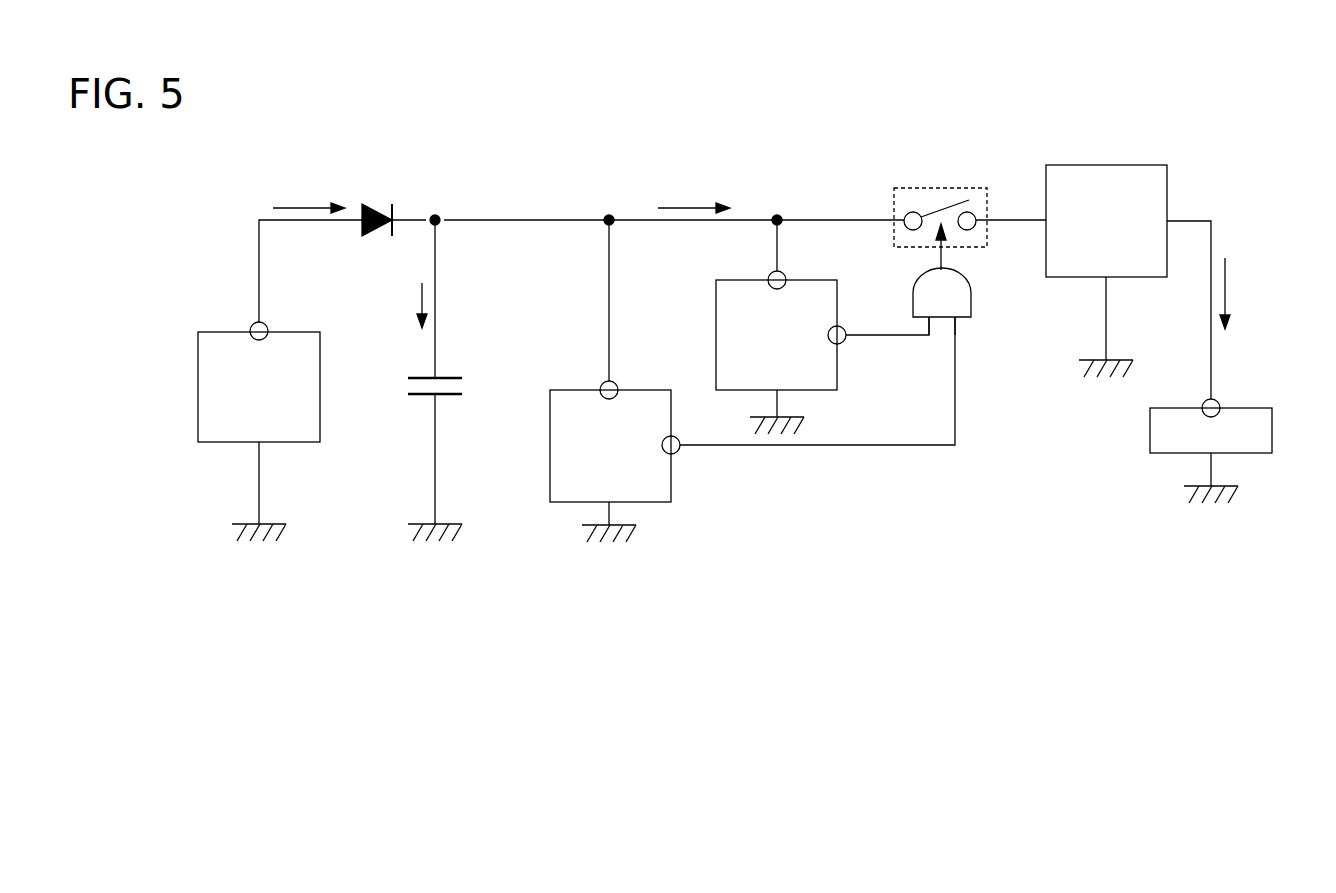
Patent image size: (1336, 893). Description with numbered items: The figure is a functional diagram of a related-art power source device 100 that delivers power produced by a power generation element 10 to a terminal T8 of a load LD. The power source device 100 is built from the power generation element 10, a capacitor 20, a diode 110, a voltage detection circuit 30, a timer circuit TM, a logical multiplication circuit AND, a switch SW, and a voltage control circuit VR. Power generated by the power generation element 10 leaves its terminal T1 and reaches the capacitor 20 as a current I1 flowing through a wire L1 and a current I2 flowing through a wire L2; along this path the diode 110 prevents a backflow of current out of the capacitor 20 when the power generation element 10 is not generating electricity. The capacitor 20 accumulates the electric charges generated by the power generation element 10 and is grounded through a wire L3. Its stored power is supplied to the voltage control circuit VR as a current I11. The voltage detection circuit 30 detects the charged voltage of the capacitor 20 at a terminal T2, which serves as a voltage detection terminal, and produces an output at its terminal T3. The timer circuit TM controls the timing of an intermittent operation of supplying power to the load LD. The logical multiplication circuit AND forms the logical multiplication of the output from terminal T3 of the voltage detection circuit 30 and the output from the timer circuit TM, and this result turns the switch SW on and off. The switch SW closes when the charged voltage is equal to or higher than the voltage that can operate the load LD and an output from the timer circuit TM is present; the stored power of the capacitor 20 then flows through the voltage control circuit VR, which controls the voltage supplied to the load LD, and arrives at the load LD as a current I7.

The power source device 100 is at (1225, 123).
The power generation element 10 is at (295, 329).
The diode 110 is at (371, 203).
The capacitor 20 is at (418, 397).
The voltage detection circuit 30 is at (645, 388).
The terminal T1 is at (252, 325).
The terminal T2 is at (604, 384).
The terminal T3 is at (680, 452).
The terminal T8 is at (1205, 401).
The wire L1 is at (259, 255).
The wire L2 is at (438, 303).
The wire L3 is at (437, 461).
The current I1 is at (303, 206).
The current I2 is at (420, 303).
The current I11 is at (686, 206).
The current I7 is at (1228, 290).
The switch SW is at (939, 188).
The timer circuit TM is at (810, 278).
The logical multiplication circuit AND is at (973, 302).
The voltage control circuit VR is at (1170, 180).
The load LD is at (1245, 405).